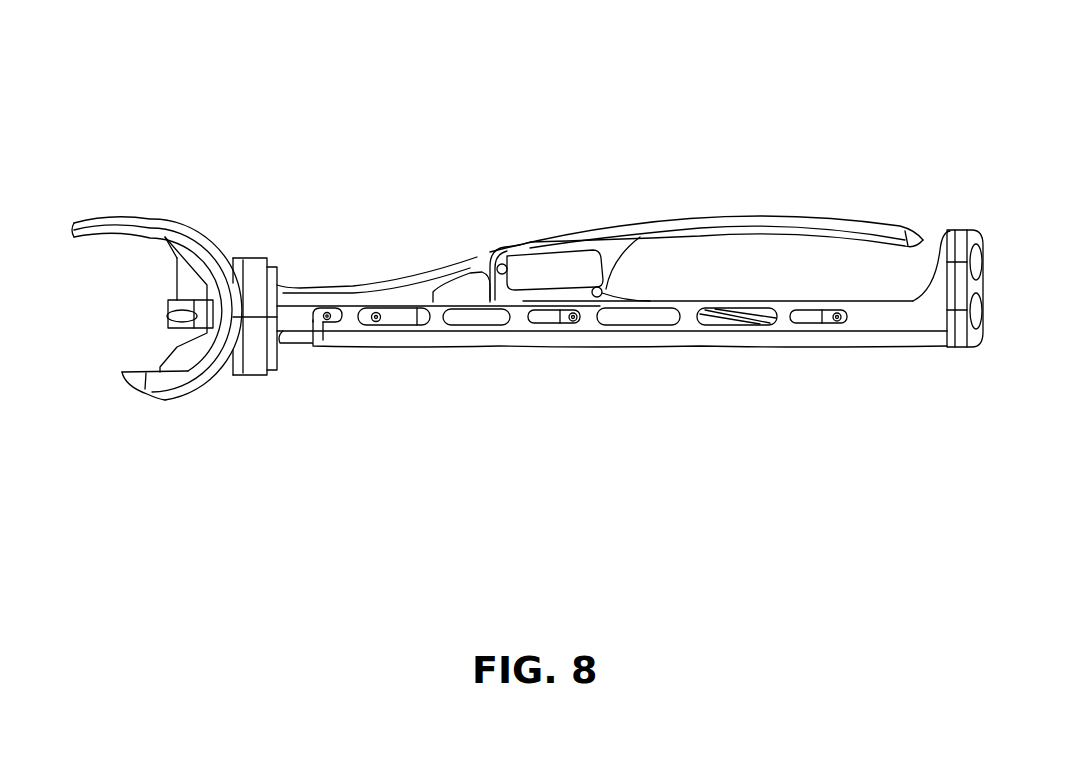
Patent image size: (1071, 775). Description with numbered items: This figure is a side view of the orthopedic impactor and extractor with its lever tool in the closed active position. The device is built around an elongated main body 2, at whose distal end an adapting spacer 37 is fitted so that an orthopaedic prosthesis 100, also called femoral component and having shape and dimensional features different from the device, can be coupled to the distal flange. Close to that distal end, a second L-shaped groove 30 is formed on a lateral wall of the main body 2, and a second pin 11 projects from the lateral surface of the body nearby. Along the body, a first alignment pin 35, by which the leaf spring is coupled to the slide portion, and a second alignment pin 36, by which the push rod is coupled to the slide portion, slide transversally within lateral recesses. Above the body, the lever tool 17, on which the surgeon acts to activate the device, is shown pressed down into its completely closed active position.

The main body 2 is at (914, 339).
The second pin 11 is at (326, 320).
The lever tool 17 is at (791, 208).
The second L-shaped groove 30 is at (342, 316).
The first alignment pin 35 is at (838, 320).
The second alignment pin 36 is at (575, 319).
The adapting spacer 37 is at (256, 256).
The orthopaedic prosthesis 100 is at (138, 214).